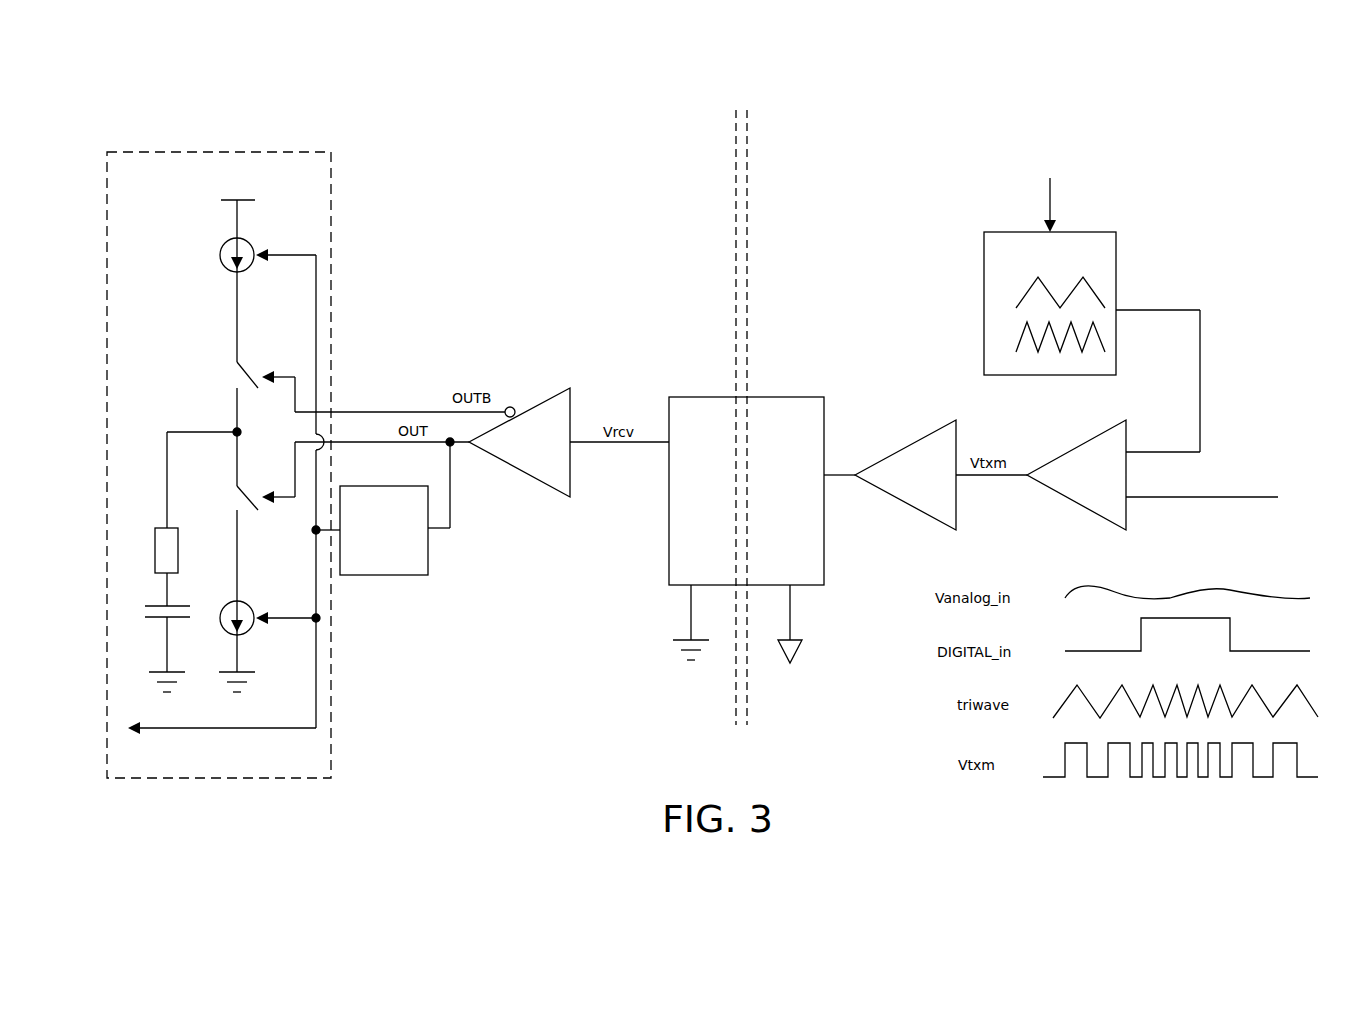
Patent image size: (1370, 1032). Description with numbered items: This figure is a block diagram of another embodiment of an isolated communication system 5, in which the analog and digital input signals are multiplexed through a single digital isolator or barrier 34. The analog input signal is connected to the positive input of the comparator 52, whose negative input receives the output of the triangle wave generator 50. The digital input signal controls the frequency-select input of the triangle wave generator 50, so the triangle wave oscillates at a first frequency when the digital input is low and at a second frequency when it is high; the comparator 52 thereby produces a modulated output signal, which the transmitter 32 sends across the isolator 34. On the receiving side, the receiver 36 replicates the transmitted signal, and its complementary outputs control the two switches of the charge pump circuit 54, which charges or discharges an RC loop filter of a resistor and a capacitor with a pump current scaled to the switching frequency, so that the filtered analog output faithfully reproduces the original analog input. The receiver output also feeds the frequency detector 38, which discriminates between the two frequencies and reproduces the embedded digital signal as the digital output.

The isolated communication system 5 is at (838, 90).
The charge pump circuit 54 is at (268, 152).
The receiver 36 is at (538, 402).
The frequency detector 38 is at (428, 565).
The digital isolator or barrier 34 is at (786, 397).
The transmitter 32 is at (908, 446).
The triangle wave generator 50 is at (984, 262).
The comparator 52 is at (1082, 504).